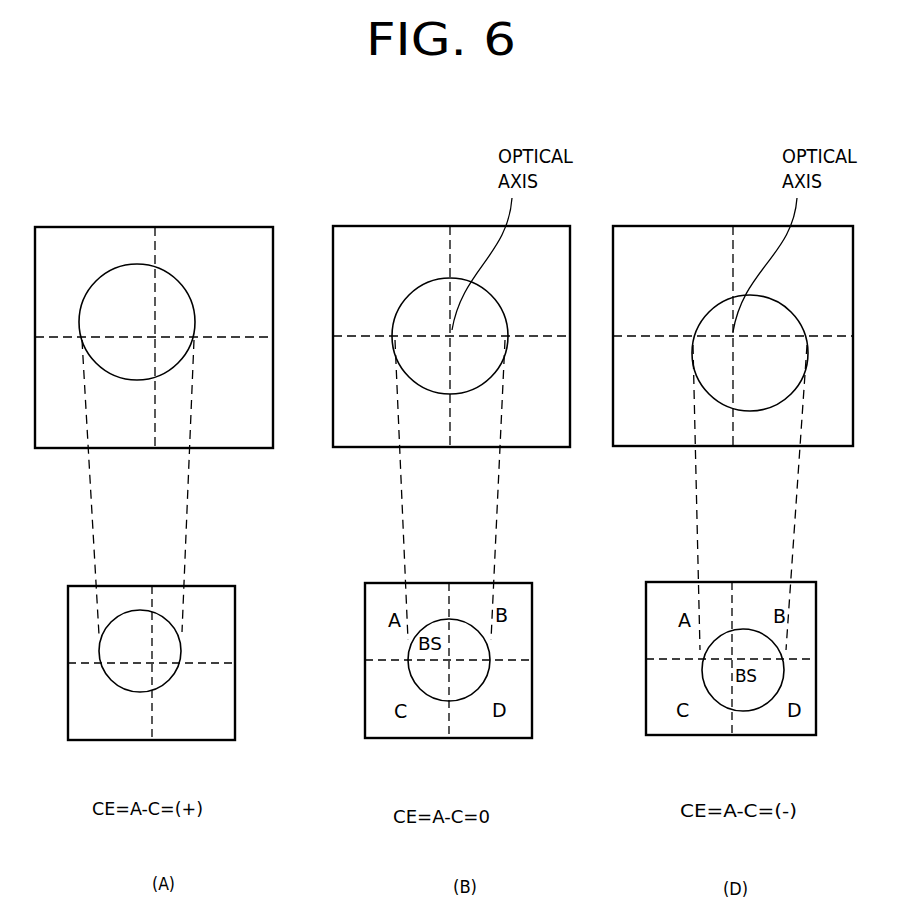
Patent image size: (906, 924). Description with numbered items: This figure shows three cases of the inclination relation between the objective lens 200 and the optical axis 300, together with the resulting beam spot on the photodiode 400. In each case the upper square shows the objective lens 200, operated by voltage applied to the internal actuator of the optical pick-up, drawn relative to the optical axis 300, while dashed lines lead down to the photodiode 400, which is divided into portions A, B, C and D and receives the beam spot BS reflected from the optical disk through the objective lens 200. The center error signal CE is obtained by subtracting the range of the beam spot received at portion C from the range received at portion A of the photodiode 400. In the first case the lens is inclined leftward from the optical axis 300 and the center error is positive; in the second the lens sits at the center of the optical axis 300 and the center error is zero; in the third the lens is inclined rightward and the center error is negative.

The objective lens 200 is at (118, 265).
The optical axis 300 is at (153, 337).
The photodiode 400 is at (212, 585).